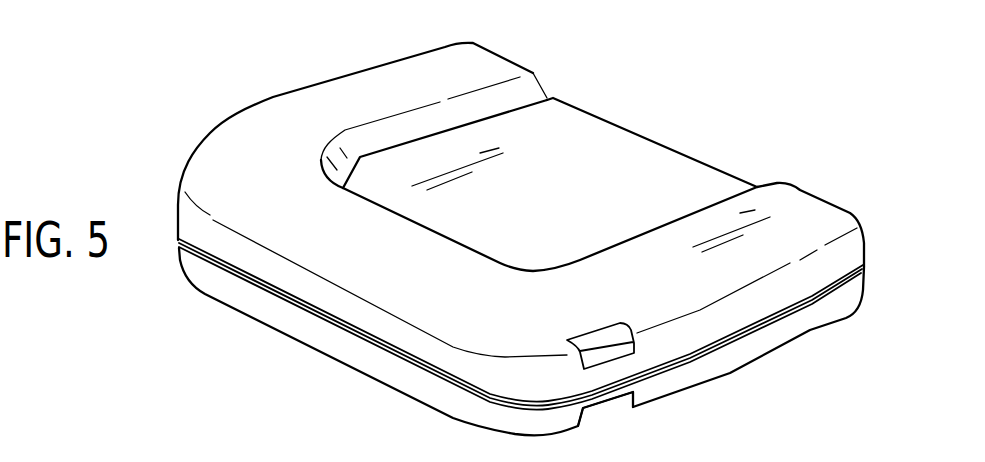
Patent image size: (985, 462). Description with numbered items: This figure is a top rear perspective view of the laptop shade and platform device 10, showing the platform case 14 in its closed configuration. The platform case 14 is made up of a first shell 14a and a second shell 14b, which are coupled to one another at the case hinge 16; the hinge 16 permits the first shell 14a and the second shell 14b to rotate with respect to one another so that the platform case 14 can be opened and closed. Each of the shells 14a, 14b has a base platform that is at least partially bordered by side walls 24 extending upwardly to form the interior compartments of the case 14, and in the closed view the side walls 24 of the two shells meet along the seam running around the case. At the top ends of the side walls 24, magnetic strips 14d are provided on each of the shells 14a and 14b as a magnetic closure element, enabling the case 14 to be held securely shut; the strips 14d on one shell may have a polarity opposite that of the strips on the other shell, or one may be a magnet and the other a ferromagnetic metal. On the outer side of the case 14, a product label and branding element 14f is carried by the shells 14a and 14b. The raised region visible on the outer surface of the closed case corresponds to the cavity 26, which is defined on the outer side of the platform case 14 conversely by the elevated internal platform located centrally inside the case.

The laptop shade and platform device 10 is at (130, 119).
The platform case 14 is at (760, 365).
The first shell 14a is at (810, 210).
The second shell 14b is at (365, 365).
The magnetic strips 14d is at (793, 303).
The product label and branding element 14f is at (630, 345).
The case hinge 16 is at (571, 195).
The side walls 24 is at (853, 245).
The cavity 26 is at (643, 147).